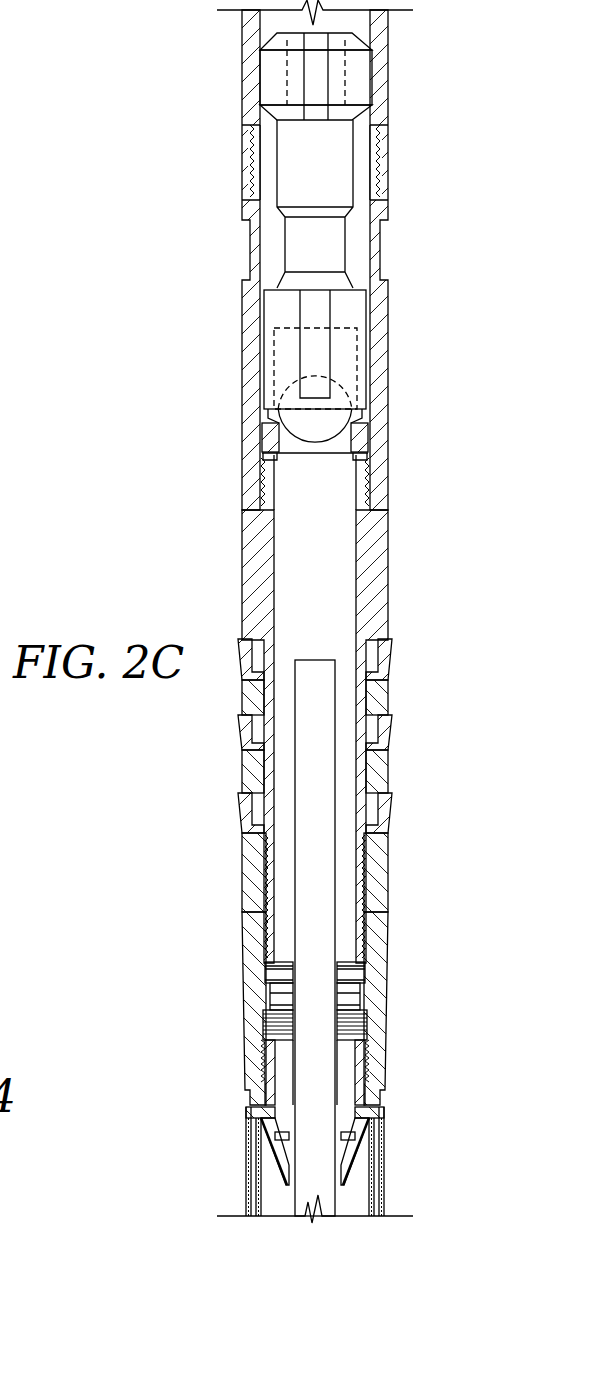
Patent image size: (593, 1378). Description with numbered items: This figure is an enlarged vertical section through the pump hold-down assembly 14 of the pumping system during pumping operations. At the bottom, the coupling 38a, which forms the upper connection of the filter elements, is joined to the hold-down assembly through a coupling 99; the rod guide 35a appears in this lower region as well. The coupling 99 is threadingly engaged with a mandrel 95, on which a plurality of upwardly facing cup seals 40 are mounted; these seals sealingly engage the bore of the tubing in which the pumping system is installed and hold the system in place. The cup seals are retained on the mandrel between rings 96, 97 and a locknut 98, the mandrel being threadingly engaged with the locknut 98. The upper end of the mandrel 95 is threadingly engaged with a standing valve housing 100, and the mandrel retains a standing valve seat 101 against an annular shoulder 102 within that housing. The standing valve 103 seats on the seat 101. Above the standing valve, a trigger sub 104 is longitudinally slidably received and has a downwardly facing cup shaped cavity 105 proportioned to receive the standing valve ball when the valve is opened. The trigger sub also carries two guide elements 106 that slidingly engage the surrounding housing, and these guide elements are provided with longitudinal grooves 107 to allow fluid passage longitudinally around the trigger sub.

The pump hold-down assembly 14 is at (242, 761).
The rod guide 35a is at (352, 1167).
The coupling 38a is at (367, 1100).
The cup seals 40 is at (392, 653).
The mandrel 95 is at (377, 588).
The ring 96 is at (378, 695).
The ring 97 is at (382, 773).
The locknut 98 is at (380, 868).
The coupling 99 is at (372, 993).
The standing valve housing 100 is at (385, 321).
The standing valve seat 101 is at (363, 447).
The annular shoulder 102 is at (368, 432).
The standing valve 103 is at (343, 418).
The trigger sub 104 is at (317, 248).
The cup shaped cavity 105 is at (340, 357).
The guide elements 106 is at (352, 44).
The longitudinal grooves 107 is at (357, 78).